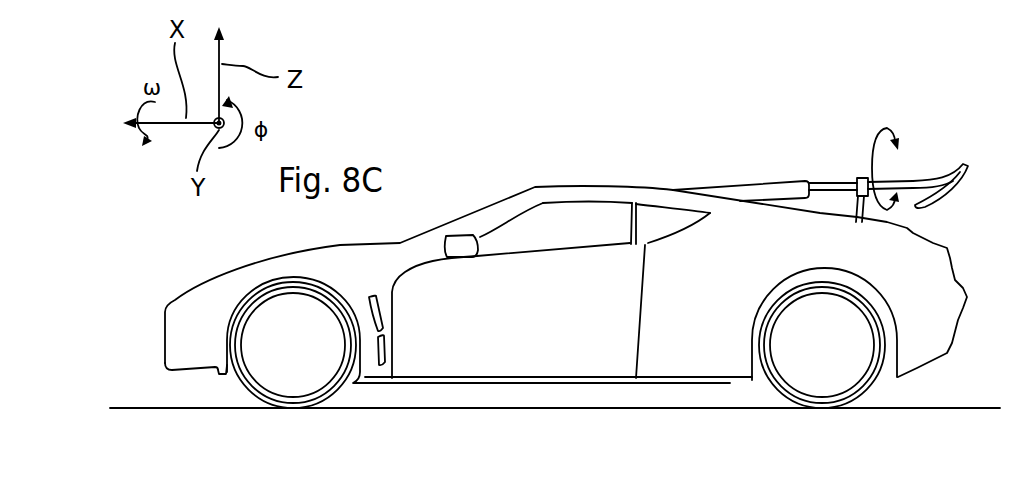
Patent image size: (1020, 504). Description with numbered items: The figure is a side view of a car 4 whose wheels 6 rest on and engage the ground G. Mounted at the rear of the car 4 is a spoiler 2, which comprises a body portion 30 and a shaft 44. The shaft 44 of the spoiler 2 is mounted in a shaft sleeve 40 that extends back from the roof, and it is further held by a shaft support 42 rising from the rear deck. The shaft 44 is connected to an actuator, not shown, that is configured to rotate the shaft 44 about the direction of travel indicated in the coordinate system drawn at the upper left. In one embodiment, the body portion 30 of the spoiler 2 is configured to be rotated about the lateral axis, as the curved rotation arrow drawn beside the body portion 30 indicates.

The spoiler 2 is at (966, 148).
The car 4 is at (446, 196).
The wheels 6 is at (862, 397).
The body portion 30 is at (908, 156).
The shaft sleeve 40 is at (768, 183).
The shaft support 42 is at (848, 187).
The shaft 44 is at (825, 183).
The ground G is at (975, 408).